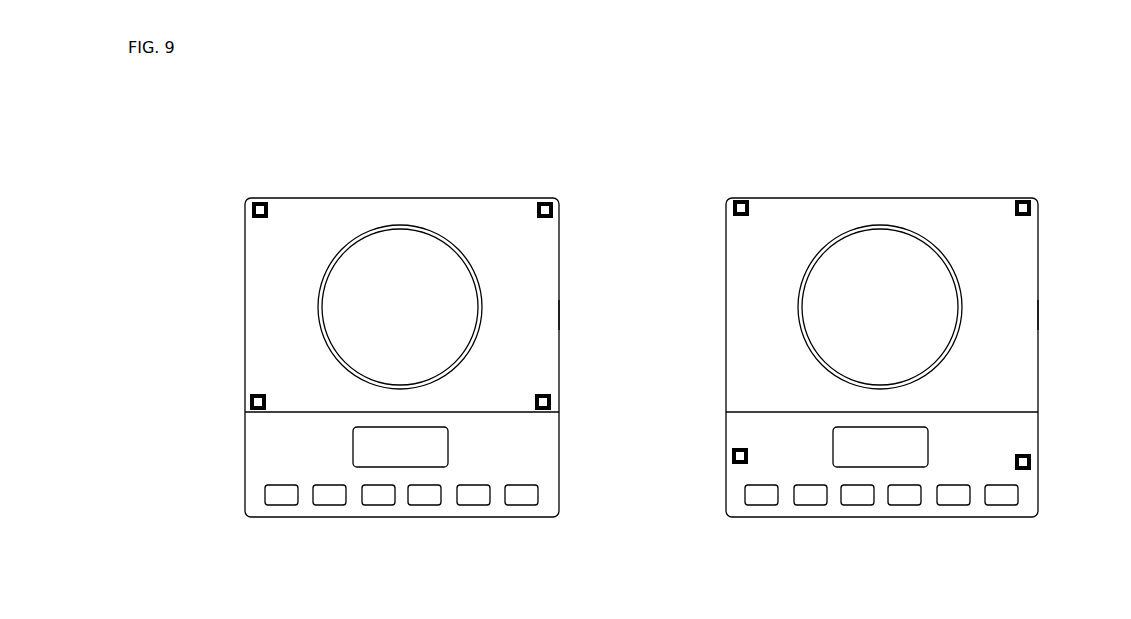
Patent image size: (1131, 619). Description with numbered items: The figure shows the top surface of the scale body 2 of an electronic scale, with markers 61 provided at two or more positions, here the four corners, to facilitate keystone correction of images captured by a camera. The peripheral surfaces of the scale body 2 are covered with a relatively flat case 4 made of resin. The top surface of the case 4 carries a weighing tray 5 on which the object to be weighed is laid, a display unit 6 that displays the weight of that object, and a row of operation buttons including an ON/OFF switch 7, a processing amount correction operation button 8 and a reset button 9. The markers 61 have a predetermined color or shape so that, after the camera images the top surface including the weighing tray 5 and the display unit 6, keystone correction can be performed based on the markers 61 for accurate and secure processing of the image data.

The scale body 2 is at (322, 168).
The case 4 is at (559, 318).
The weighing tray 5 is at (450, 280).
The display unit 6 is at (357, 437).
The marker 61 is at (248, 203).
The ON/OFF switch 7 is at (285, 497).
The processing amount correction operation button 8 is at (380, 497).
The reset button 9 is at (332, 498).